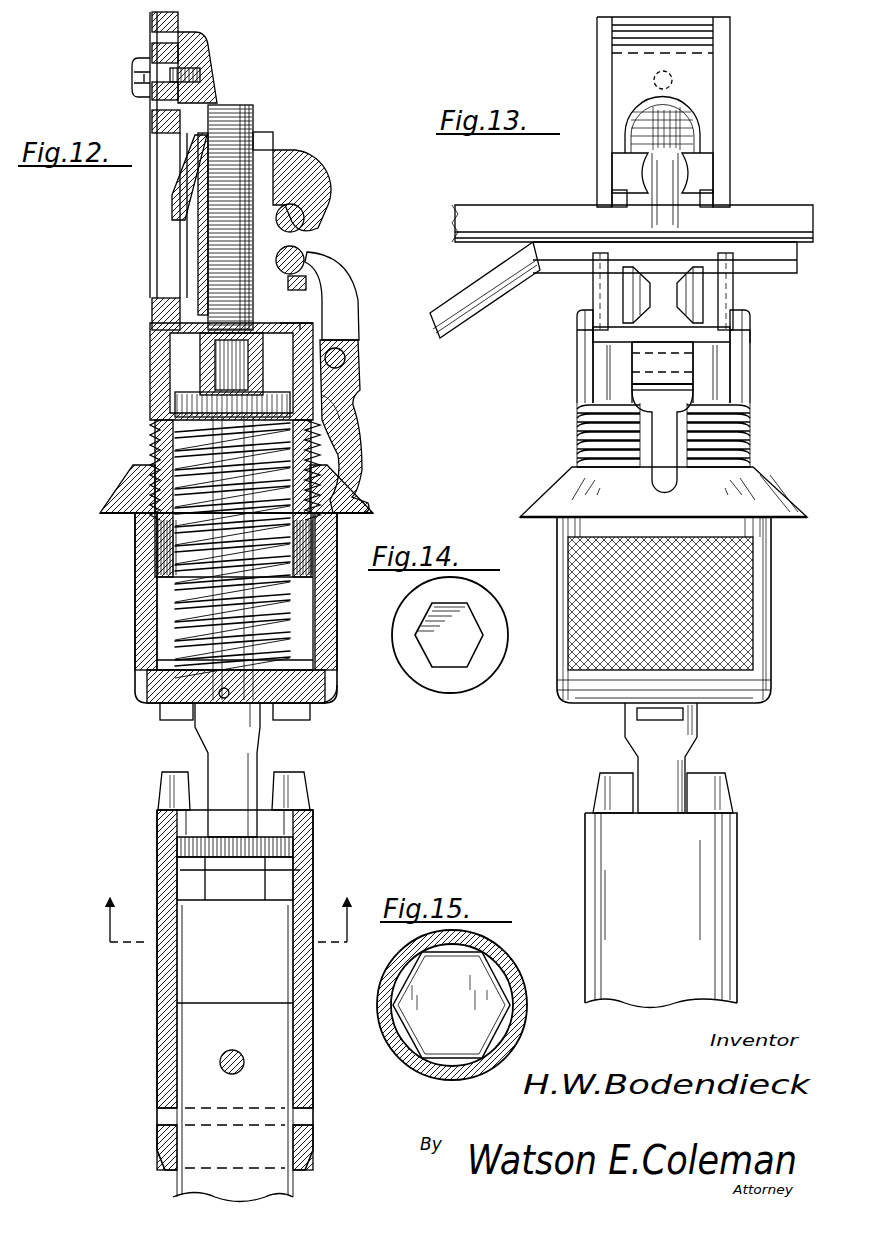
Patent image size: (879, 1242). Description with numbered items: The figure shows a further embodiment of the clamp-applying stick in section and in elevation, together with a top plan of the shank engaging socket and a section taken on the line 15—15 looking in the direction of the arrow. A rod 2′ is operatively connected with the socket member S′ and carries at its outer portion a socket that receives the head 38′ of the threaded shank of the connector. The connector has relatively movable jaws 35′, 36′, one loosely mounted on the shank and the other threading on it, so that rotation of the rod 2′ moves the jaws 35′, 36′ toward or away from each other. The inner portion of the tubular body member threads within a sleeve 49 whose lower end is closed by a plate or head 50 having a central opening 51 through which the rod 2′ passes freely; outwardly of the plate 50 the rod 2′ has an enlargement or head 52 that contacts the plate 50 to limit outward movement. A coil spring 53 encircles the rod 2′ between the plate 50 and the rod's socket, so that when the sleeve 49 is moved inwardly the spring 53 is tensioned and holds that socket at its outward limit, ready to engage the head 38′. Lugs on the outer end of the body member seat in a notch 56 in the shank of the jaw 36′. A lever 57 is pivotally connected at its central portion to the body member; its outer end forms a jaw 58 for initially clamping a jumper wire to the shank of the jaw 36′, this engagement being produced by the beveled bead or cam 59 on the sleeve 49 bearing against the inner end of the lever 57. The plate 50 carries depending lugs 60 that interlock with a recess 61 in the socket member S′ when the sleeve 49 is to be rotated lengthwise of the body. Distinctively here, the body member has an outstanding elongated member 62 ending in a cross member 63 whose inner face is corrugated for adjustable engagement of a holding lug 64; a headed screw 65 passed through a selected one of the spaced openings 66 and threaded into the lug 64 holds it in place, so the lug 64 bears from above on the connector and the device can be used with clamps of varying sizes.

In FIG. 12, the outstanding elongated member 62 is at (152, 176).
In FIG. 13, the outstanding elongated member 62 is at (597, 140).
In FIG. 12, the spaced openings 66 is at (152, 38).
In FIG. 13, the spaced openings 66 is at (612, 53).
In FIG. 12, the cross member 63 is at (134, 60).
In FIG. 12, the holding lug 64 is at (203, 48).
In FIG. 13, the holding lug 64 is at (702, 58).
In FIG. 12, the headed screw 65 is at (205, 76).
In FIG. 13, the headed screw 65 is at (673, 80).
In FIG. 12, the jaw 35′ is at (300, 160).
In FIG. 13, the jaw 35′ is at (705, 170).
In FIG. 12, the jaw 58 is at (305, 254).
In FIG. 12, the lever 57 is at (345, 298).
In FIG. 13, the lever 57 is at (598, 330).
In FIG. 12, the jaw 36′ is at (315, 282).
In FIG. 13, the jaw 36′ is at (622, 285).
In FIG. 12, the notch 56 is at (346, 360).
In FIG. 13, the notch 56 is at (700, 362).
In FIG. 12, the head 38′ is at (210, 368).
In FIG. 12, the coil spring 53 is at (180, 437).
In FIG. 12, the beveled bead or cam 59 is at (118, 484).
In FIG. 13, the beveled bead or cam 59 is at (765, 477).
In FIG. 12, the sleeve 49 is at (135, 612).
In FIG. 13, the sleeve 49 is at (771, 588).
In FIG. 12, the rod 2′ is at (172, 652).
In FIG. 12, the plate or head 50 is at (180, 684).
In FIG. 12, the central opening 51 is at (338, 692).
In FIG. 12, the depending lugs 60 is at (292, 720).
In FIG. 13, the depending lugs 60 is at (640, 723).
In FIG. 12, the enlargement or head 52 is at (224, 698).
In FIG. 12, the recess 61 is at (170, 786).
In FIG. 13, the recess 61 is at (628, 786).
In FIG. 12, the section line 15 is at (229, 905).
In FIG. 12, the socket member S′ is at (157, 1042).
In FIG. 13, the socket member S′ is at (735, 881).
In FIG. 15, the socket member S′ is at (405, 1050).